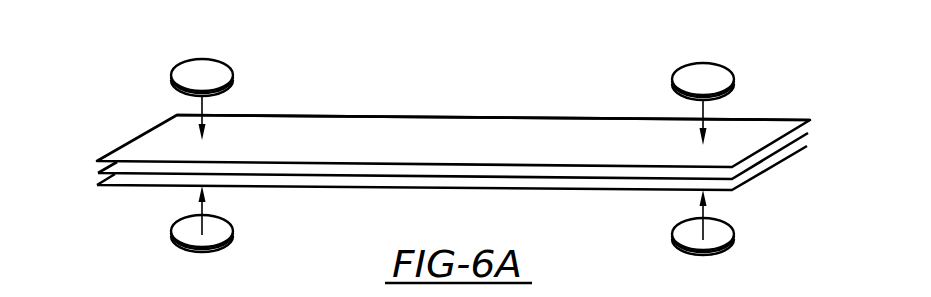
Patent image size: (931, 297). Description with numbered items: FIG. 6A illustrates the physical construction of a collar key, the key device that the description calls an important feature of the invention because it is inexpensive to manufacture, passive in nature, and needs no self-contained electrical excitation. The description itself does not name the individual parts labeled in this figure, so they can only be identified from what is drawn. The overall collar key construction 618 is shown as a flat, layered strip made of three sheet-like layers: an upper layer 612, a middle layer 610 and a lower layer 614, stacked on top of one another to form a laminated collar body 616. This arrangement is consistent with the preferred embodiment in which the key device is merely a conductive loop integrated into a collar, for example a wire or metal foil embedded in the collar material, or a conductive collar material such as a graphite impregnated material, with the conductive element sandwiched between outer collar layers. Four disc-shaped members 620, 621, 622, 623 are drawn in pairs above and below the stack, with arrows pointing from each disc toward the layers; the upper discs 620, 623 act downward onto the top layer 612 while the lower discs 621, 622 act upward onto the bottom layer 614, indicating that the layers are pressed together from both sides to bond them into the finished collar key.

The middle layer / substrate 610 is at (808, 133).
The top layer / cover sheet 612 is at (810, 120).
The bottom layer / base sheet 614 is at (807, 146).
The laminated stack assembly 616 is at (426, 106).
The lamination process step 618 is at (112, 46).
The upper left pressure roller / disc 620 is at (230, 70).
The lower left pressure roller / disc 621 is at (233, 231).
The lower right pressure roller / disc 622 is at (735, 239).
The upper right pressure roller / disc 623 is at (730, 67).